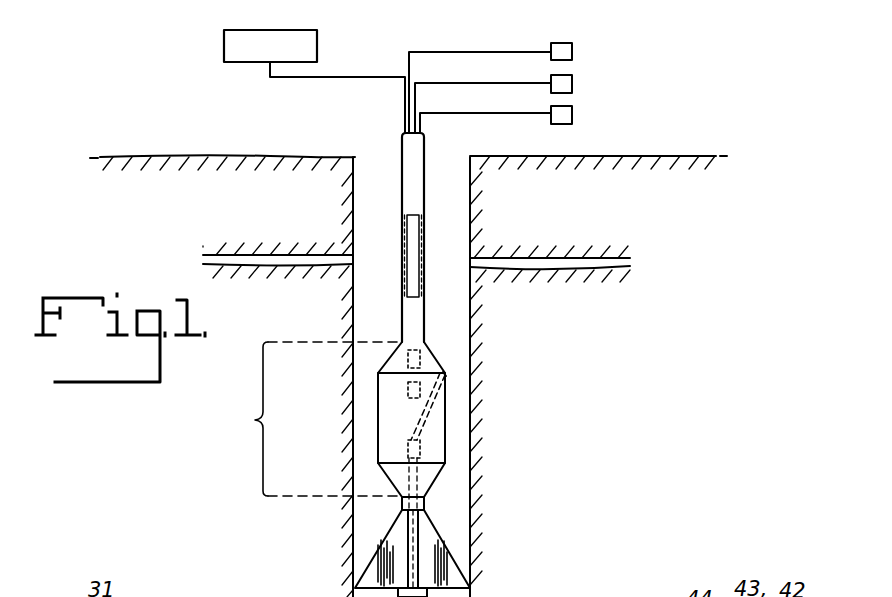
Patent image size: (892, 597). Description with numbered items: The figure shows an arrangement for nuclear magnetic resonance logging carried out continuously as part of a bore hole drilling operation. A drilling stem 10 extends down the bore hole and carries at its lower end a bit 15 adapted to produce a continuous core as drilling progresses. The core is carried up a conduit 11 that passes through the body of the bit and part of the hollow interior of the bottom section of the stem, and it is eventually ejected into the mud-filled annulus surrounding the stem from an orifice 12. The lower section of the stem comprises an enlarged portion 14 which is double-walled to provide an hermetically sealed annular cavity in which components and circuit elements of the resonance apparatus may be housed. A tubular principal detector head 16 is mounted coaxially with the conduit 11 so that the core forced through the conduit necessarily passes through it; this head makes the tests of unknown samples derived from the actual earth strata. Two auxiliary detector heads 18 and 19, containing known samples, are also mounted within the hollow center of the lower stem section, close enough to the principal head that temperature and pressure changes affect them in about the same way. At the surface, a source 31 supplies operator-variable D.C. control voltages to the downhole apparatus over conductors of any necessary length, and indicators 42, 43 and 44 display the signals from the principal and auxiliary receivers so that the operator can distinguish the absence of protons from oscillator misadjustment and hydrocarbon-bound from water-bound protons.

The drilling stem 10 is at (428, 148).
The conduit 11 is at (424, 413).
The orifice 12 is at (447, 374).
The enlarged portion 14 is at (254, 420).
The bit 15 is at (452, 570).
The principal detector head 16 is at (421, 450).
The auxiliary detector head 18 is at (408, 390).
The auxiliary detector head 19 is at (421, 356).
The source of control voltages 31 is at (230, 41).
The indicator of principal receiver 42 is at (574, 115).
The indicator of auxiliary receiver 43 is at (574, 84).
The indicator of auxiliary receiver 44 is at (574, 52).